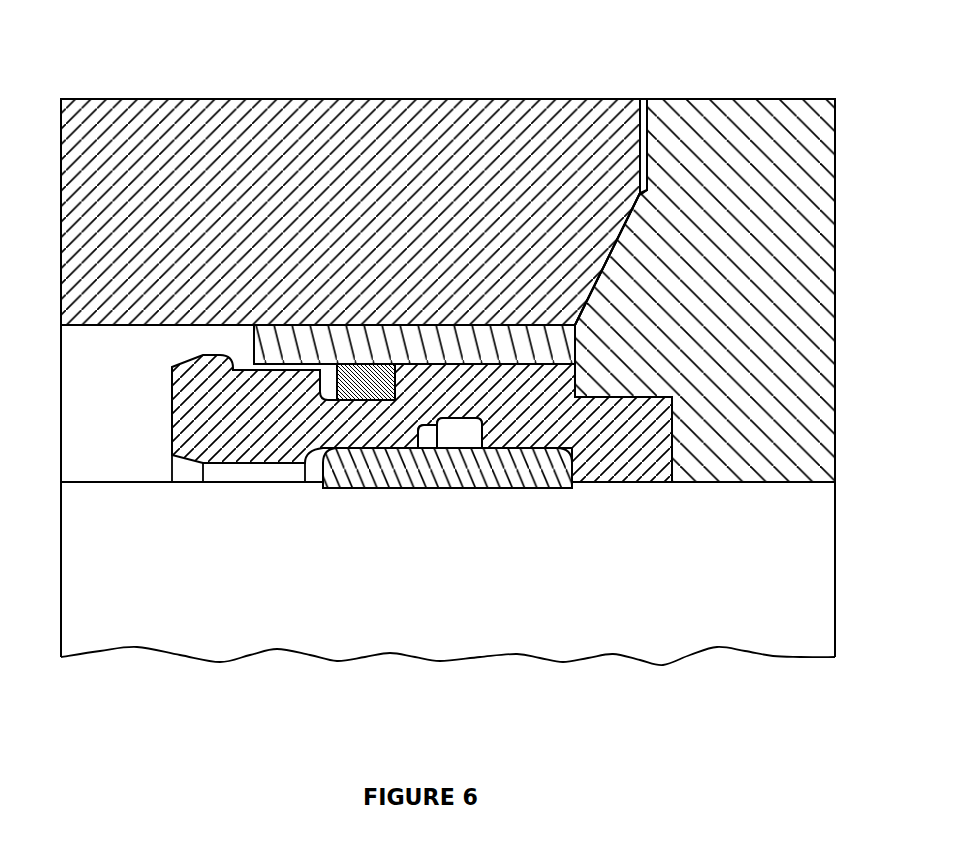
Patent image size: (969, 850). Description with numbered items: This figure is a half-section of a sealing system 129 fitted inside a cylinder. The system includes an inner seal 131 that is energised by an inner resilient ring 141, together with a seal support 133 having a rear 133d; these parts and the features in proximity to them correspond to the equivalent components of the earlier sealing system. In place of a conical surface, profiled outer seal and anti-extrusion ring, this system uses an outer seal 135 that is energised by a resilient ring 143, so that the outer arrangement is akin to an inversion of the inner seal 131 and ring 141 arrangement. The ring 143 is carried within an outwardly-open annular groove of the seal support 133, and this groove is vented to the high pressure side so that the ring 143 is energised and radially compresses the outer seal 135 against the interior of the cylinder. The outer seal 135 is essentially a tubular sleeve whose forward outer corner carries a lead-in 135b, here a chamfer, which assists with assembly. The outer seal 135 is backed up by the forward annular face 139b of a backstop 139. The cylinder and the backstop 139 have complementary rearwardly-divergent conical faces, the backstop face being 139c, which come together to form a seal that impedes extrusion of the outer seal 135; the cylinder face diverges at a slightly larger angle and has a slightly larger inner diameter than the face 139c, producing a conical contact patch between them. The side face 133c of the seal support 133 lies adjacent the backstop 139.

The sealing system 129 is at (442, 511).
The inner seal 131 is at (447, 468).
The seal support 133 is at (422, 418).
The retainer body side face 133c is at (575, 383).
The rear 133d is at (622, 439).
The outer seal 135 is at (414, 344).
The lead-in 135b is at (260, 330).
The backstop 139 is at (745, 99).
The forward annular face of the backstop 139b is at (575, 345).
The conical face of the backstop 139c is at (645, 223).
The inner resilient ring 141 is at (450, 433).
The resilient ring 143 is at (366, 382).